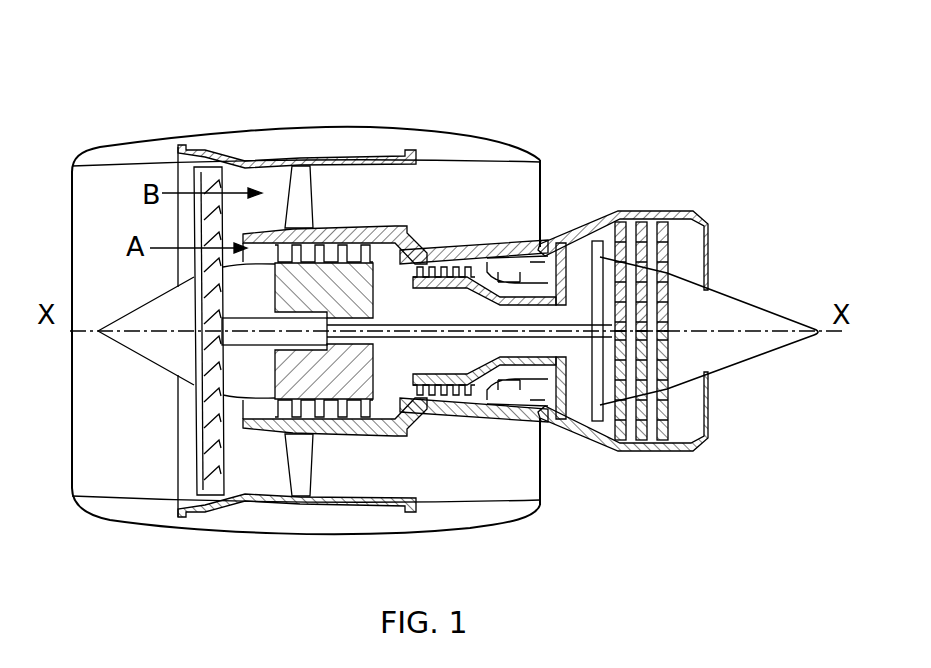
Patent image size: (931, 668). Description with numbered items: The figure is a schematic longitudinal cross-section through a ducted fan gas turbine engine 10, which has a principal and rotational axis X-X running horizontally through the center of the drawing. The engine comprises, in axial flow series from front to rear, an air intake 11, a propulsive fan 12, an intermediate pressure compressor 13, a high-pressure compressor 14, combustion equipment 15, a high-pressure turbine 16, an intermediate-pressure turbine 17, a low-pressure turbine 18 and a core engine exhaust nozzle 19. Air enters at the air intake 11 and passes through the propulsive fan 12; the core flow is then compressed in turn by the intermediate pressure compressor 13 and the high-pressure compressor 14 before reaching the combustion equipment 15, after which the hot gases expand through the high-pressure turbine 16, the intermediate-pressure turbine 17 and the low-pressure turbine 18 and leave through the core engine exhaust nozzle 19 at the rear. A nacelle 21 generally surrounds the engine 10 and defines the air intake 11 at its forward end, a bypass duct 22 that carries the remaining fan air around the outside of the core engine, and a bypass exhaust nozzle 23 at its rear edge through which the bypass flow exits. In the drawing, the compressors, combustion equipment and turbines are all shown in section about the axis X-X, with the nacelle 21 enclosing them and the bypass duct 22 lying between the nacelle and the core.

The ducted fan gas turbine engine 10 is at (118, 96).
The air intake 11 is at (120, 163).
The propulsive fan 12 is at (197, 457).
The intermediate pressure compressor 13 is at (338, 412).
The high-pressure compressor 14 is at (480, 233).
The combustion equipment 15 is at (505, 400).
The high-pressure turbine 16 is at (553, 418).
The intermediate-pressure turbine 17 is at (593, 237).
The low-pressure turbine 18 is at (610, 442).
The core engine exhaust nozzle 19 is at (700, 212).
The nacelle 21 is at (345, 146).
The bypass duct 22 is at (493, 202).
The bypass exhaust nozzle 23 is at (538, 158).